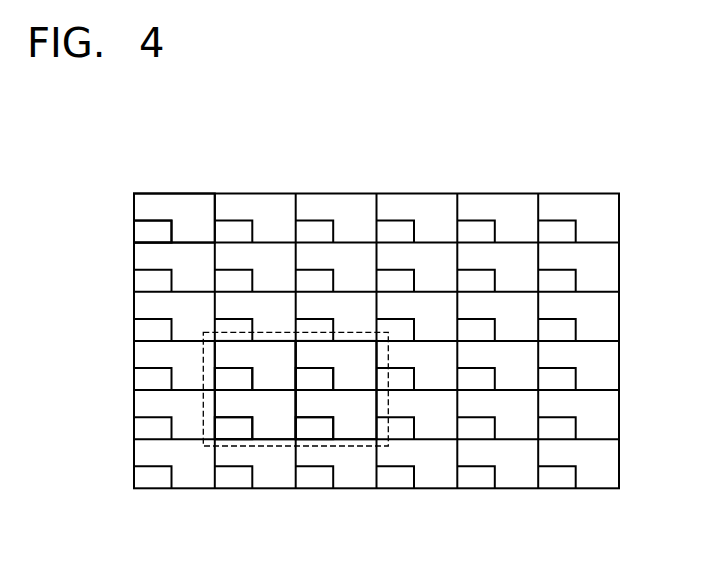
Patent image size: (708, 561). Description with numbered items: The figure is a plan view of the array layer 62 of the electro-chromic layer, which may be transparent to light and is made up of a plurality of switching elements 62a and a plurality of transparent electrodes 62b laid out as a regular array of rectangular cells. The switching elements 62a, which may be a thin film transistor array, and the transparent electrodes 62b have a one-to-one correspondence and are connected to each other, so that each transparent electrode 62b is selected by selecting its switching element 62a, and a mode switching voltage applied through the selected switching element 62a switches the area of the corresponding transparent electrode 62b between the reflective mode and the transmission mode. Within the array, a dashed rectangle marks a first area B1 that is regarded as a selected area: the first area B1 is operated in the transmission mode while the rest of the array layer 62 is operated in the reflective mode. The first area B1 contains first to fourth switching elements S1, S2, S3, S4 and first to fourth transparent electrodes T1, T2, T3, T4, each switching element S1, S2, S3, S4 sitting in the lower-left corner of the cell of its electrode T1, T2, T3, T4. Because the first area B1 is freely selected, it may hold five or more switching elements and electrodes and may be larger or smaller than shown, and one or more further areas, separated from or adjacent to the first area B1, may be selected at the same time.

The array layer 62 is at (128, 188).
The switching element 62a is at (143, 230).
The transparent electrode 62b is at (182, 203).
The first area B1 is at (273, 448).
The first transparent electrode T1 is at (274, 357).
The second transparent electrode T2 is at (356, 357).
The third transparent electrode T3 is at (222, 402).
The fourth transparent electrode T4 is at (368, 404).
The first switching element S1 is at (225, 380).
The second switching element S2 is at (322, 382).
The third switching element S3 is at (225, 429).
The fourth switching element S4 is at (322, 432).